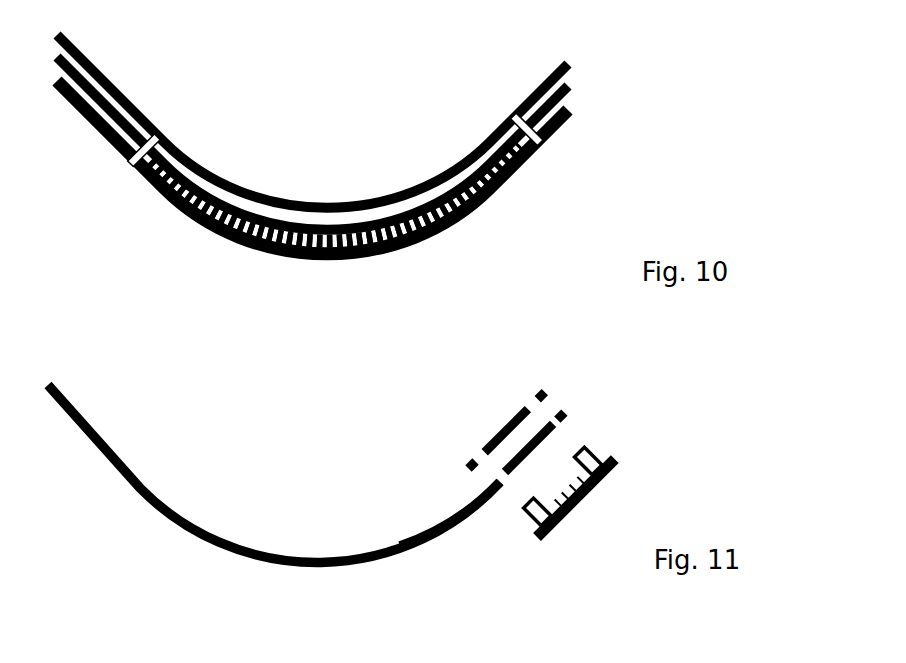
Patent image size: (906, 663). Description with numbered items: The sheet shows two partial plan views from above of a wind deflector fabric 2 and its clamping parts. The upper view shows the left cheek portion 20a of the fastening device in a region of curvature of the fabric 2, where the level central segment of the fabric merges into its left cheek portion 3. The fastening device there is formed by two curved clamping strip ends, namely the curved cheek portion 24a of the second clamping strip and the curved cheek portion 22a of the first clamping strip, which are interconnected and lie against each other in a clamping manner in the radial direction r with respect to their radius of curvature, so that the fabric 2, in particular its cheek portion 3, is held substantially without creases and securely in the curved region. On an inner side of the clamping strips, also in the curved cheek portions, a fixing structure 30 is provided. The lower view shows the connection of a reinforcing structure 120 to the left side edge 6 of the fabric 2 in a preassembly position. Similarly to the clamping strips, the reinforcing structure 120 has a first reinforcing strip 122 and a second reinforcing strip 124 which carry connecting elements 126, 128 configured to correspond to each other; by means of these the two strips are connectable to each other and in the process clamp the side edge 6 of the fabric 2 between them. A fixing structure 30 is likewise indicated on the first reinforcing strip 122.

In FIG. 10, the left cheek portion 20a is at (415, 127).
In FIG. 10, the curved cheek portion 24a is at (297, 204).
In FIG. 10, the curved cheek portion 22a is at (312, 209).
In FIG. 10, the left cheek portion 3 is at (352, 232).
In FIG. 10, the fixing structure 30 is at (358, 262).
In FIG. 11, the fixing structure 30 is at (580, 442).
In FIG. 10, the radial direction r is at (228, 123).
In FIG. 11, the fabric 2 is at (192, 526).
In FIG. 11, the left side edge 6 is at (460, 524).
In FIG. 11, the reinforcing structure 120 is at (474, 377).
In FIG. 11, the second reinforcing strip 124 is at (488, 436).
In FIG. 11, the connecting element 128 is at (482, 448).
In FIG. 11, the first reinforcing strip 122 is at (568, 503).
In FIG. 11, the connecting element 126 is at (533, 505).